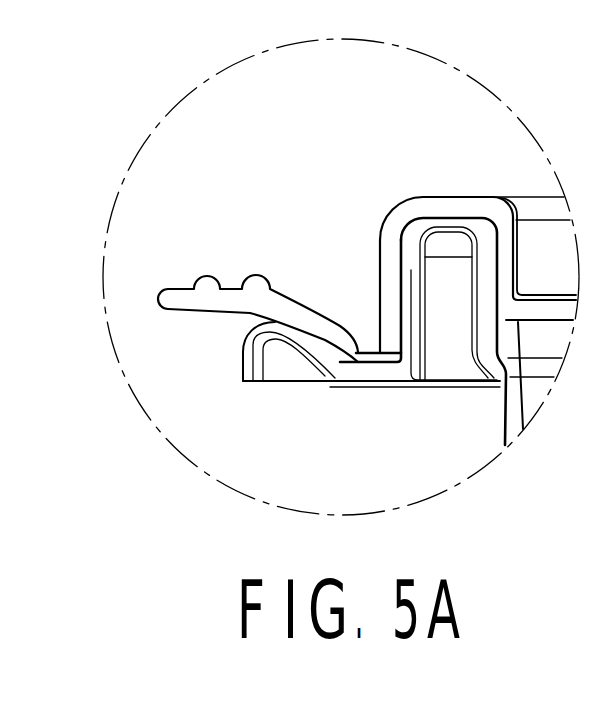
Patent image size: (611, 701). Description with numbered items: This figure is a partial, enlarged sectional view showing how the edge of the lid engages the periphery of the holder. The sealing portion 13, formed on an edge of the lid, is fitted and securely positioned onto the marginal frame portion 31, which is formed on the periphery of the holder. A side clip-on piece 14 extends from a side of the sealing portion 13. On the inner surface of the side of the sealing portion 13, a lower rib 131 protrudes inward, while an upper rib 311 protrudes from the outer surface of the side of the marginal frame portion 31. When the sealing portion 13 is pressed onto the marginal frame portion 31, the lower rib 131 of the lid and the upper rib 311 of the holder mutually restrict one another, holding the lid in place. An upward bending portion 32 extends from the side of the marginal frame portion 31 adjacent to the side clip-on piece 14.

The sealing portion 13 is at (442, 194).
The lower rib 131 is at (400, 280).
The side clip-on piece 14 is at (258, 296).
The marginal frame portion 31 is at (463, 218).
The upper rib 311 is at (400, 280).
The upward bending portion 32 is at (322, 361).